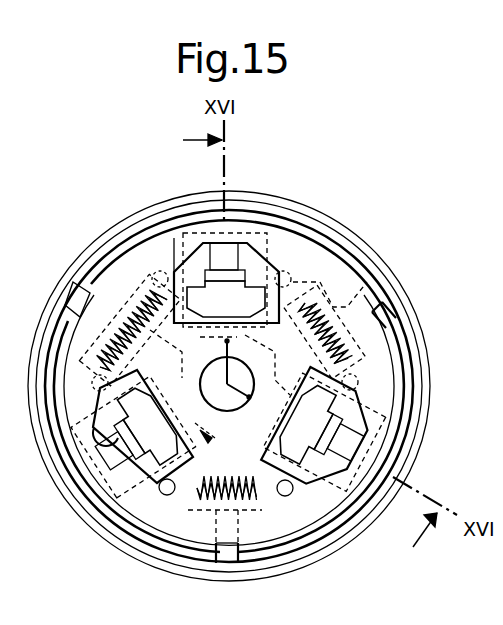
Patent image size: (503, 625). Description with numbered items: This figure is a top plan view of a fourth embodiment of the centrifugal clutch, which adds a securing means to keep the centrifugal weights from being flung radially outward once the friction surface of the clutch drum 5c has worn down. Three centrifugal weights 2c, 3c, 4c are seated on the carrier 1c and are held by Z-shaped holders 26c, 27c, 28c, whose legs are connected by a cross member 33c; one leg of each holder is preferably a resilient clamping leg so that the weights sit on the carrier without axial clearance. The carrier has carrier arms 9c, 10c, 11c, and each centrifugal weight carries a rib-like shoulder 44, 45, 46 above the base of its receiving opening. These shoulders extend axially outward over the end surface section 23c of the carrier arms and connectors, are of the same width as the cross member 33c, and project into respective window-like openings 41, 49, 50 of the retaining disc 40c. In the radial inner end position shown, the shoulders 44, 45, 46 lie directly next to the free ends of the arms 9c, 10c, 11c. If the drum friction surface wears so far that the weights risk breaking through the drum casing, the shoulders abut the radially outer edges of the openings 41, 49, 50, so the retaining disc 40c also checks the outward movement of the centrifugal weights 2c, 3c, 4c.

The carrier 1c is at (188, 463).
The centrifugal weight 2c is at (290, 220).
The centrifugal weight 3c is at (396, 357).
The centrifugal weight 4c is at (112, 512).
The clutch drum 5c is at (373, 250).
The carrier arm 9c is at (257, 340).
The carrier arm 10c is at (287, 423).
The carrier arm 11c is at (175, 368).
The end surface section 23c is at (248, 228).
The holder 26c is at (174, 270).
The holder 27c is at (322, 402).
The holder 28c is at (175, 405).
The cross member 33c is at (212, 266).
The retaining disc 40c is at (372, 322).
The window-like opening 41 is at (261, 277).
The rib-like shoulder 44 is at (235, 263).
The rib-like shoulder 45 is at (333, 442).
The rib-like shoulder 46 is at (98, 426).
The window-like opening 49 is at (311, 473).
The window-like opening 50 is at (78, 308).